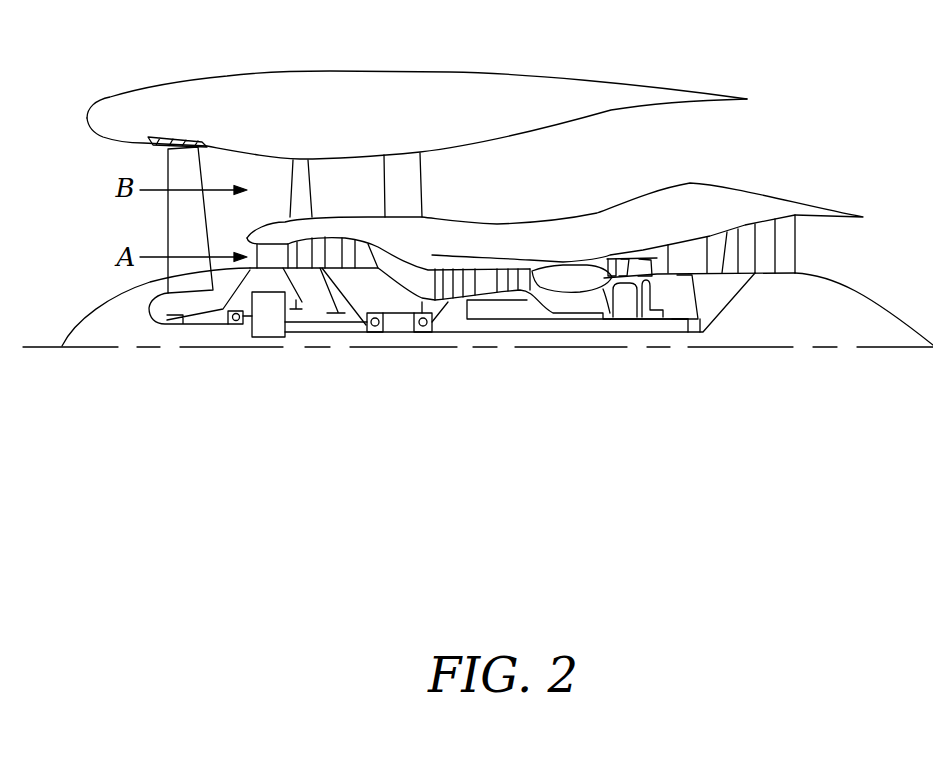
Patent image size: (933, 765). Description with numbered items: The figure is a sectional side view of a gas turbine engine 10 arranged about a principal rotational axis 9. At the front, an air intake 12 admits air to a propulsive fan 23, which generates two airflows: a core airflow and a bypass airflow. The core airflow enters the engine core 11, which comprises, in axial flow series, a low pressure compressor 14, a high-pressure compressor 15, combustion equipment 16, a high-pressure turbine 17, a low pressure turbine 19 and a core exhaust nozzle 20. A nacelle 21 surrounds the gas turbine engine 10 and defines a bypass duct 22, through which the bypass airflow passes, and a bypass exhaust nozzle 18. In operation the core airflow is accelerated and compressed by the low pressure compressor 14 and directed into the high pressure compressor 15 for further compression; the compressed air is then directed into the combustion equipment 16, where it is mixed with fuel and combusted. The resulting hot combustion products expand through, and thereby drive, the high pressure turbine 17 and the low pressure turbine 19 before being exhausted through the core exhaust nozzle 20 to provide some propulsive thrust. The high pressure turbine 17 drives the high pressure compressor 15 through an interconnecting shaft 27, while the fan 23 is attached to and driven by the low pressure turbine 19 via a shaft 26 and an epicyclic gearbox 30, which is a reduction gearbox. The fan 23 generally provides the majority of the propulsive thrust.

The principal rotational axis 9 is at (650, 350).
The gas turbine engine 10 is at (409, 79).
The core 11 is at (532, 243).
The air intake 12 is at (118, 167).
The low pressure compressor 14 is at (338, 247).
The high-pressure compressor 15 is at (486, 280).
The combustion equipment 16 is at (563, 282).
The high-pressure turbine 17 is at (620, 280).
The bypass exhaust nozzle 18 is at (740, 137).
The low pressure turbine 19 is at (767, 235).
The core exhaust nozzle 20 is at (828, 245).
The nacelle 21 is at (398, 85).
The bypass duct 22 is at (667, 154).
The propulsive fan 23 is at (170, 223).
The shaft 26 is at (480, 333).
The interconnecting shaft 27 is at (522, 320).
The epicyclic gearbox 30 is at (267, 325).